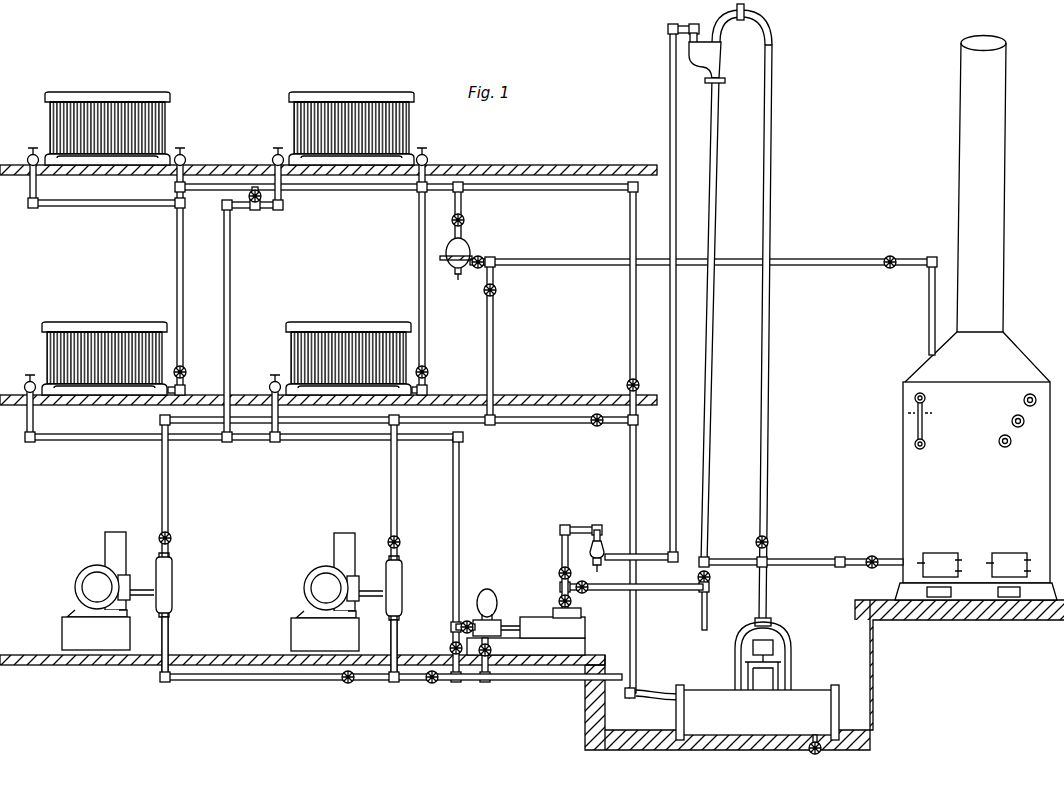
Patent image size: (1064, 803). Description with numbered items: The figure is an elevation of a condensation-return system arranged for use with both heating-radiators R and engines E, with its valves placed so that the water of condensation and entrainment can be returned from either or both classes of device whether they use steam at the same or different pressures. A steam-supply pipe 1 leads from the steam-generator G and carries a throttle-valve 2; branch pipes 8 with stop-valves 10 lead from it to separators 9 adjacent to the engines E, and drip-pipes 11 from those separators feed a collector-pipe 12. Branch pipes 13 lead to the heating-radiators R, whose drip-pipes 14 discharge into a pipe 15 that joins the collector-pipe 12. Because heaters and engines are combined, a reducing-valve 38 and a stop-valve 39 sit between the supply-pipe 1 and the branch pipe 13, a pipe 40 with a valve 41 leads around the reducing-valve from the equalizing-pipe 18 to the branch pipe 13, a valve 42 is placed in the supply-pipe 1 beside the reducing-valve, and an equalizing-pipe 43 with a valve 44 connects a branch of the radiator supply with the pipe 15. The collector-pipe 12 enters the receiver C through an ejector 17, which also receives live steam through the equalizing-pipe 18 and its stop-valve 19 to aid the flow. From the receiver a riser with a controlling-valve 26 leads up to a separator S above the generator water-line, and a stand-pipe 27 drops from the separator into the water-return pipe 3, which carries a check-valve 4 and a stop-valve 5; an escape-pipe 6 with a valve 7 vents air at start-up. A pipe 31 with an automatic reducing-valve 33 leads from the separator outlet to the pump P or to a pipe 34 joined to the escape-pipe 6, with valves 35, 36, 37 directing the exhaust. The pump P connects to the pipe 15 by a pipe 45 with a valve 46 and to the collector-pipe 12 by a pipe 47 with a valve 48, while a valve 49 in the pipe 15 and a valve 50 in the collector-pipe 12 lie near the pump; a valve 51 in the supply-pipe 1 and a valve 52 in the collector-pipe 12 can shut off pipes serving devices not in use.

The steam-supply pipe 1 is at (602, 266).
The throttle-valve 2 is at (890, 256).
The water-return pipe 3 is at (800, 560).
The check-valve 4 is at (840, 557).
The stop-valve 5 is at (875, 554).
The escape-pipe 6 is at (709, 605).
The valve 7 is at (710, 578).
The branch pipes 8 is at (168, 492).
The separators 9 is at (172, 585).
The stop-valves 10 is at (172, 538).
The drip-pipes 11 is at (168, 635).
The collector-pipe 12 is at (300, 681).
The branch pipes 13 is at (190, 165).
The drip-pipes 14 is at (30, 205).
The pipe 15 is at (229, 330).
The ejector 17 is at (656, 690).
The equalizing-pipe 18 is at (550, 425).
The stop-valve 19 is at (597, 428).
The controlling-valve 26 is at (765, 536).
The stand-pipe 27 is at (762, 198).
The pipe 31 is at (668, 130).
The automatic reducing-valve 33 is at (602, 535).
The pipe 34 is at (652, 591).
The valve 35 is at (562, 570).
The valve 36 is at (586, 592).
The valve 37 is at (560, 601).
The reducing-valve 38 is at (468, 250).
The stop-valve 39 is at (466, 220).
The pipe 40 is at (628, 195).
The valve 41 is at (626, 386).
The valve 42 is at (498, 291).
The equalizing-pipe 43 is at (262, 208).
The valve 44 is at (230, 210).
The pipe 45 is at (470, 620).
The valve 46 is at (458, 620).
The pipe 47 is at (457, 684).
The valve 48 is at (490, 683).
The valve 49 is at (452, 640).
The valve 50 is at (430, 684).
The valve 51 is at (478, 270).
The valve 52 is at (348, 685).
The heating-radiators R is at (110, 95).
The engines E is at (96, 575).
The pump P is at (513, 615).
The separator S is at (722, 55).
The steam-generator G is at (925, 465).
The receiver C is at (765, 738).